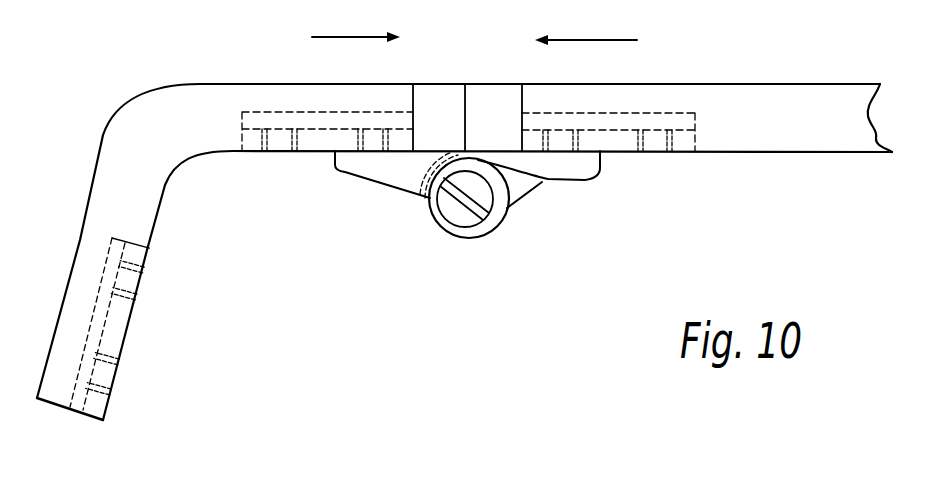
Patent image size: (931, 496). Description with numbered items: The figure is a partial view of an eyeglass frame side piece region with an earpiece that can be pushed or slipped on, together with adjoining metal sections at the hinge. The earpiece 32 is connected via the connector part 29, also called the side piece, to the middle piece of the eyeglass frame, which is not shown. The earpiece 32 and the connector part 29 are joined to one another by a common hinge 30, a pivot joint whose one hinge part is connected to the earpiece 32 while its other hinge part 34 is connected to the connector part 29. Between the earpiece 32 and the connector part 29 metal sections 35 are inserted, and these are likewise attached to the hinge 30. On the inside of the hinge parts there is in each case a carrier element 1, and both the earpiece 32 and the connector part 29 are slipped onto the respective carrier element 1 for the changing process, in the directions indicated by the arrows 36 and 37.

The carrier element 1 is at (327, 116).
The connector part 29 is at (148, 122).
The hinge 30 is at (468, 240).
The earpiece 32 is at (735, 97).
The hinge part 34 is at (382, 151).
The metal sections 35 is at (488, 95).
The arrow 36 is at (609, 42).
The arrow 37 is at (333, 42).